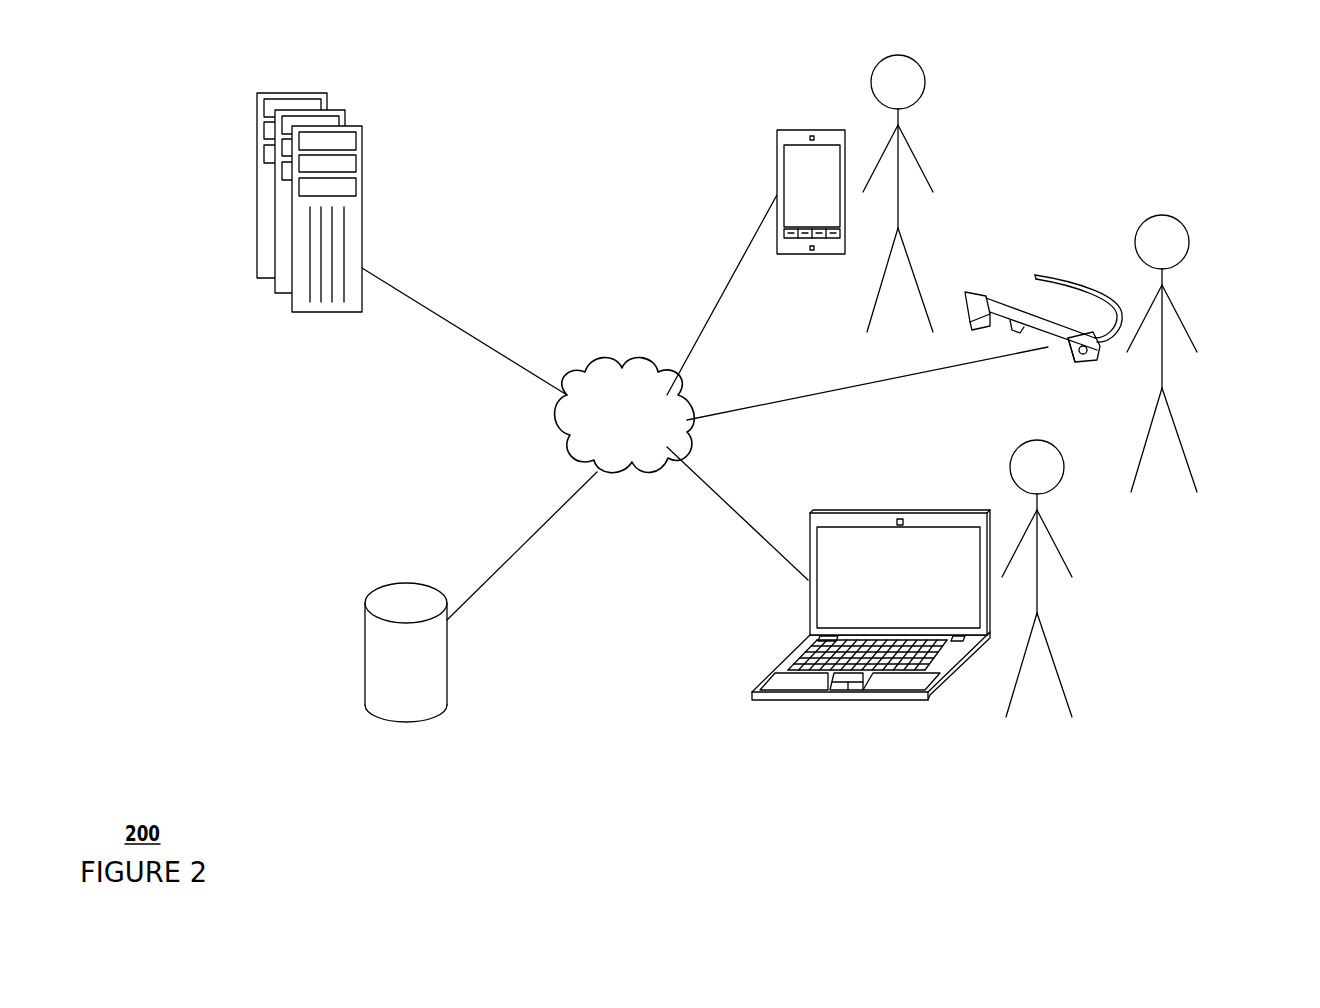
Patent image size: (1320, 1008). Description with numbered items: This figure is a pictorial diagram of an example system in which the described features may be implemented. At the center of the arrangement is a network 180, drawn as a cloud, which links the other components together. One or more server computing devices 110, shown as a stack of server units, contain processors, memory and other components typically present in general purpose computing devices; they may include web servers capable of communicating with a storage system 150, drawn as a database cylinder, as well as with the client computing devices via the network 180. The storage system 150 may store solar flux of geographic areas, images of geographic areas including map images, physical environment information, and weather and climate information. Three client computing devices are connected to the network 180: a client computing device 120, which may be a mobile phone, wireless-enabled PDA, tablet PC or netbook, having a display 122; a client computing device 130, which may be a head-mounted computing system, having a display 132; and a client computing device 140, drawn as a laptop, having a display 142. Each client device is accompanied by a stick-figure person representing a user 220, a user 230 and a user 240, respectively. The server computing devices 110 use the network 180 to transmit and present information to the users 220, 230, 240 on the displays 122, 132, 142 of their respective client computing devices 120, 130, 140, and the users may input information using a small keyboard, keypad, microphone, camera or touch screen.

The server computing device 110 is at (363, 167).
The client computing device 120 is at (758, 192).
The display 122 is at (777, 190).
The client computing device 130 is at (1043, 312).
The display 132 is at (1090, 360).
The client computing device 140 is at (846, 605).
The display 142 is at (810, 618).
The storage system 150 is at (448, 670).
The network 180 is at (705, 406).
The user 220 is at (928, 181).
The user 230 is at (1194, 343).
The user 240 is at (1068, 568).